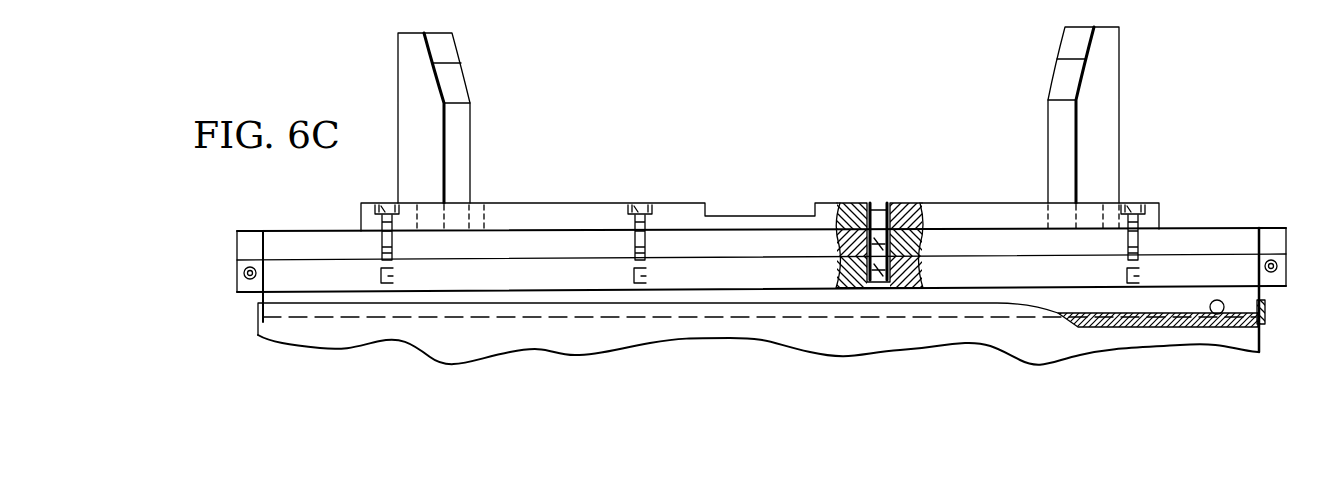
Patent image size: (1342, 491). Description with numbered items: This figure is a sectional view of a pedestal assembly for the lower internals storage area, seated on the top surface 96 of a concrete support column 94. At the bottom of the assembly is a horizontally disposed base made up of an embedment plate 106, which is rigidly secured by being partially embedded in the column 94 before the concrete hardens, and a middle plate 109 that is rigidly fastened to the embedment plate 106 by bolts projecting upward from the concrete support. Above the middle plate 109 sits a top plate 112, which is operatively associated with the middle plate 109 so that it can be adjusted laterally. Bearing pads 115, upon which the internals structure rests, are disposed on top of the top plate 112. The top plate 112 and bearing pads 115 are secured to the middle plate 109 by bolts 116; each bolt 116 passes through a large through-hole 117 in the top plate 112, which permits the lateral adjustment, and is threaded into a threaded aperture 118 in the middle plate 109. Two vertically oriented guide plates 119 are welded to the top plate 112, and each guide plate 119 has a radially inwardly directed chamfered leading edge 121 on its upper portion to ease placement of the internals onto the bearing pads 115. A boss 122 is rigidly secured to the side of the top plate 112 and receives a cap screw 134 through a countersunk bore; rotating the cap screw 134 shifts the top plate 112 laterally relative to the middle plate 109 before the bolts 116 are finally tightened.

The concrete support column 94 is at (1243, 326).
The top surface 96 is at (1214, 314).
The embedment plate 106 is at (1265, 313).
The middle plate 109 is at (1230, 268).
The top plate 112 is at (1193, 236).
The bearing pad 115 is at (686, 210).
The bolt 116 is at (381, 200).
The through-hole 117 is at (870, 244).
The threaded aperture 118 is at (872, 271).
The guide plate 119 is at (400, 50).
The chamfered leading edge 121 is at (450, 38).
The boss 122 is at (247, 247).
The cap screw 134 is at (244, 277).